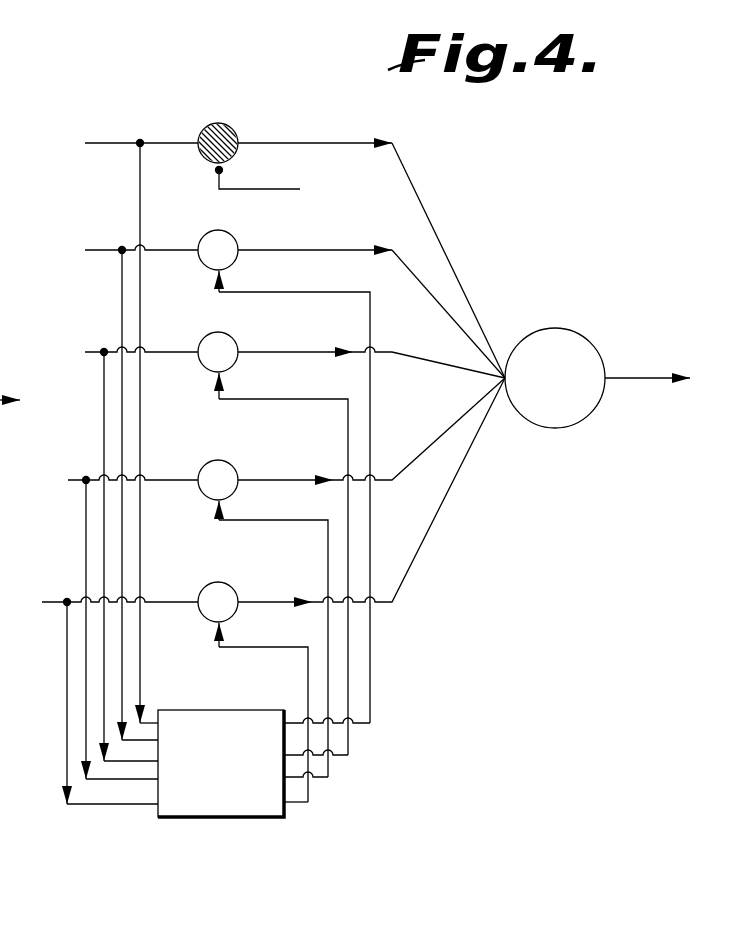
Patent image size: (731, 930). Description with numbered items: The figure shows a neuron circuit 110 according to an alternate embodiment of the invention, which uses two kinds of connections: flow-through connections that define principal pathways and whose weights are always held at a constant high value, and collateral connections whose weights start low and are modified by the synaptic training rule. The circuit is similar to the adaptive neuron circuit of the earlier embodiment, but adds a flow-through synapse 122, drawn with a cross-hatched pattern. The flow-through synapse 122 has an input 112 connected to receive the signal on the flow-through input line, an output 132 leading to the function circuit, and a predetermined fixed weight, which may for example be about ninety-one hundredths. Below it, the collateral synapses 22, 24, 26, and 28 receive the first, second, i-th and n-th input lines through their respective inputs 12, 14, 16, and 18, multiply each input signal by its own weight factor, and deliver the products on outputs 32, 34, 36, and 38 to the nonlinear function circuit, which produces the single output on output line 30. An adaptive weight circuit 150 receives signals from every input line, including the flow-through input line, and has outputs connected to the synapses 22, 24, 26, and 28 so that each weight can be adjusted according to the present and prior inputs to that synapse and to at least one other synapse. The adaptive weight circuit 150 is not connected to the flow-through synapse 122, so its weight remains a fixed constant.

The input 112 is at (147, 146).
The flow-through synapse 122 is at (219, 123).
The output 132 is at (296, 141).
The input 12 is at (159, 255).
The synapse 22 is at (203, 234).
The output 32 is at (288, 250).
The input 14 is at (159, 355).
The synapse 24 is at (203, 336).
The output 34 is at (289, 351).
The input 16 is at (164, 485).
The synapse 26 is at (203, 465).
The output 36 is at (249, 482).
The input 18 is at (161, 608).
The synapse 28 is at (203, 590).
The output 38 is at (242, 604).
The adaptive weight circuit 150 is at (359, 762).
The neuron circuit 110 is at (446, 194).
The output line 30 is at (20, 388).